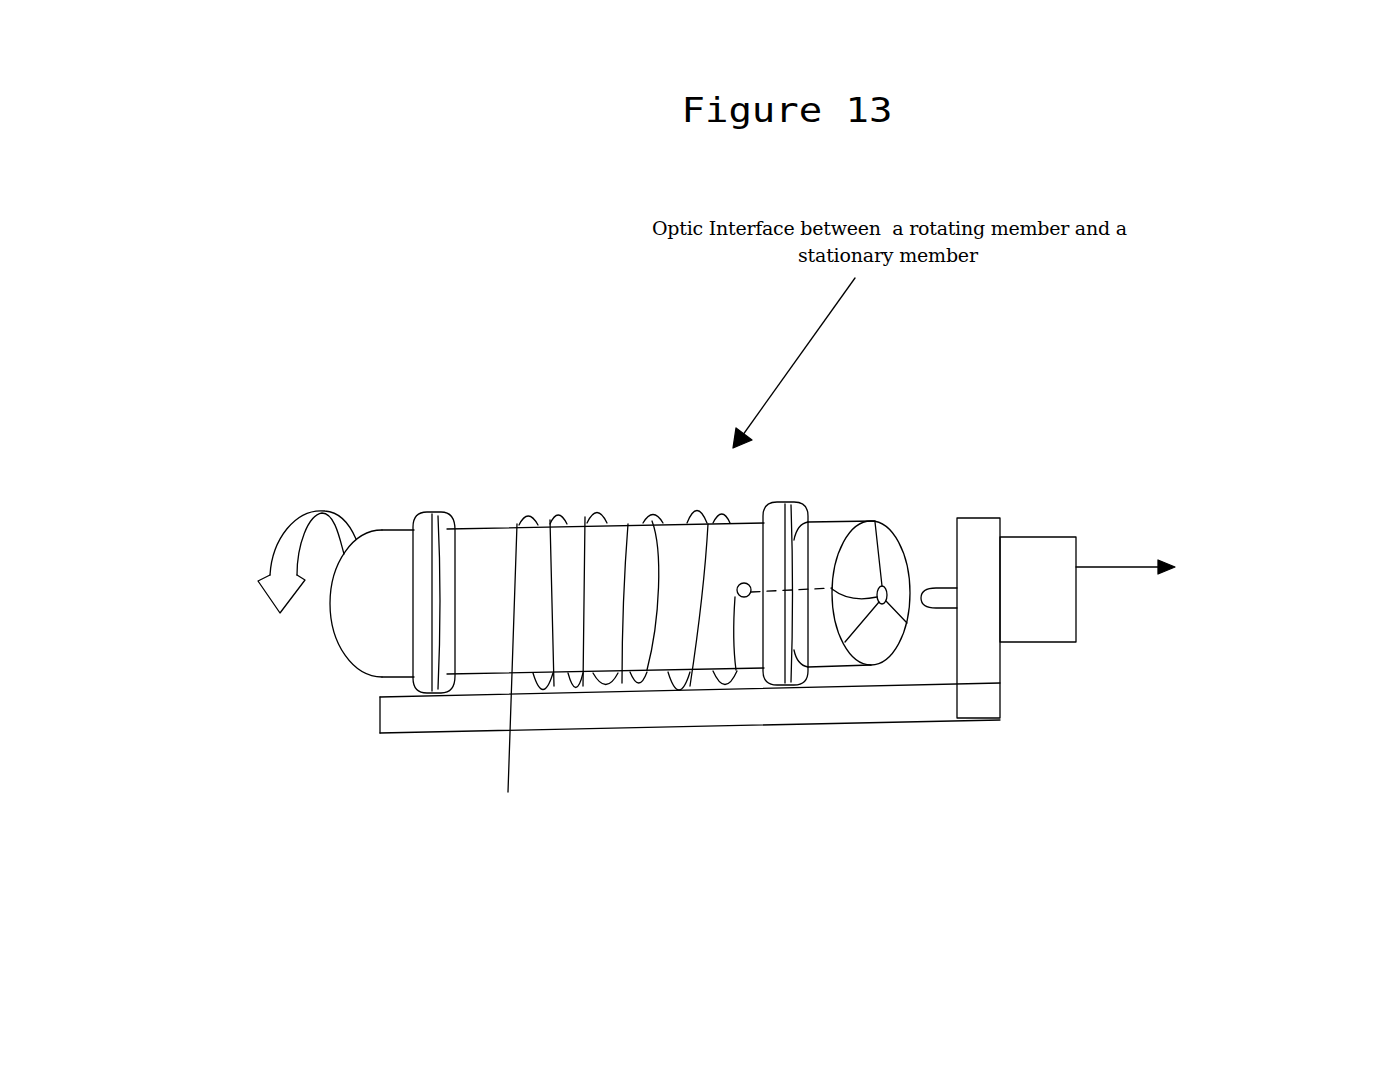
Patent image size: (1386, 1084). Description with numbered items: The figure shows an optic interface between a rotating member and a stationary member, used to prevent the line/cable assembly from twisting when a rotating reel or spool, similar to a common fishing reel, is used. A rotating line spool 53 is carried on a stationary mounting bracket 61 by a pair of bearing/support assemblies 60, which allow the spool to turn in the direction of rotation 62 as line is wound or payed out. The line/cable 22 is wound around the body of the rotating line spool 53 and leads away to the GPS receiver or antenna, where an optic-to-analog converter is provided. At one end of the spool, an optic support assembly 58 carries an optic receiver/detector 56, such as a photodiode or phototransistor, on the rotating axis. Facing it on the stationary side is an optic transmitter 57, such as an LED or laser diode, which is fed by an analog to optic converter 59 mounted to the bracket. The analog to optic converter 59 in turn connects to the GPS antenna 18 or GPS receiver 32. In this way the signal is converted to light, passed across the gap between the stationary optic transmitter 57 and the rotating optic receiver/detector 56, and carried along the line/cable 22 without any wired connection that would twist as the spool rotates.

The rotating line spool 53 is at (360, 642).
The direction of rotation 62 is at (285, 590).
The bearing/support assemblies 60 is at (425, 516).
The optic support assembly 58 is at (880, 540).
The optic receiver/detector 56 is at (883, 603).
The optic transmitter 57 is at (937, 598).
The mounting bracket 61 is at (400, 722).
The analog to optic converter 59 is at (1045, 607).
The GPS antenna 18 is at (1202, 563).
The GPS receiver 32 is at (1202, 563).
The line/cable assembly (LCA) 22 is at (635, 792).